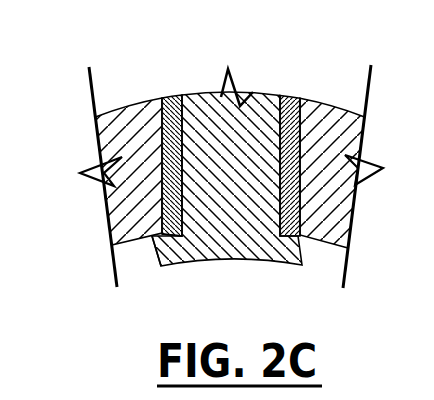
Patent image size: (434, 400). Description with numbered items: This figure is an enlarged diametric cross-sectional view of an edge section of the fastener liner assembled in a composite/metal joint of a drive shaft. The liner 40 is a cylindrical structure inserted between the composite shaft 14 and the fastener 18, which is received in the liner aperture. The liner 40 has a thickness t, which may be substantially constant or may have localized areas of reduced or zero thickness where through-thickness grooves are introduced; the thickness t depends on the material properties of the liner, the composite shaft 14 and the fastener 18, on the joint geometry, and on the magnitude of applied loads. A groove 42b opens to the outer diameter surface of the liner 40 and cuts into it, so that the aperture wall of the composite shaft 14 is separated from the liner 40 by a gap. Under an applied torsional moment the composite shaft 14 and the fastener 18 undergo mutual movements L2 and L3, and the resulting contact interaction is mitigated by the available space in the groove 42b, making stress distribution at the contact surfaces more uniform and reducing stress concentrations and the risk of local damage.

The liner 40 is at (172, 97).
The fastener 18 is at (233, 182).
The composite shaft 14 is at (333, 203).
The groove 42b is at (158, 237).
The mutual movement L2 is at (87, 208).
The mutual movement L3 is at (255, 92).
The thickness t is at (280, 92).